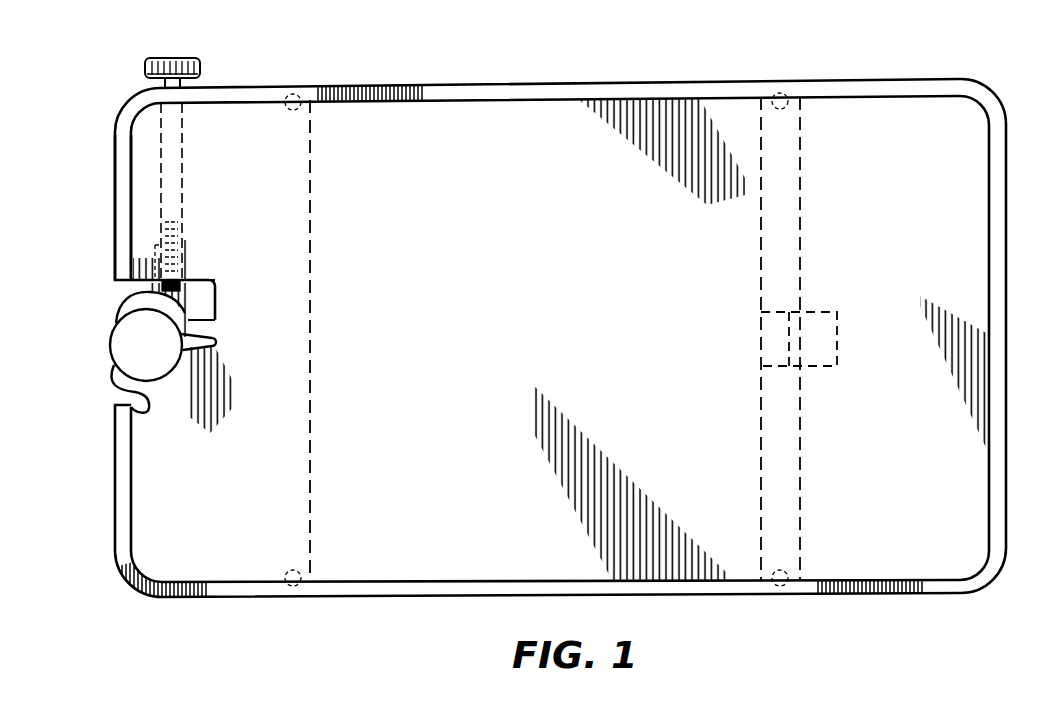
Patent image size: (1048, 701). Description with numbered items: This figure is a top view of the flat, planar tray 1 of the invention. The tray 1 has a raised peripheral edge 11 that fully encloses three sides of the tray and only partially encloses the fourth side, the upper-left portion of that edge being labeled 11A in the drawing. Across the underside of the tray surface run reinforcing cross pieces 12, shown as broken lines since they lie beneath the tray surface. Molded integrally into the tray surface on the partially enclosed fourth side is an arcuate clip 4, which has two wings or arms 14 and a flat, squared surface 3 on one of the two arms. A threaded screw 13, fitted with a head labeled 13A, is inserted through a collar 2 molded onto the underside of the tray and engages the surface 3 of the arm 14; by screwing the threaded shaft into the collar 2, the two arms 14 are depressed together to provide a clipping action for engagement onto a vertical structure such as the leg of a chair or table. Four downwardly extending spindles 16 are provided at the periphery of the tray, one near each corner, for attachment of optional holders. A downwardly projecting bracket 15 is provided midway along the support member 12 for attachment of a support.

The tray 1 is at (553, 130).
The collar 2 is at (150, 248).
The flat, squared surface 3 is at (202, 320).
The arcuate clip 4 is at (125, 298).
The raised peripheral edge 11 is at (990, 95).
The frame upper left leg 11A is at (116, 185).
The reinforcing cross pieces 12 is at (316, 256).
The threaded screw 13 is at (190, 260).
The knob 13A is at (200, 69).
The arms 14 is at (120, 328).
The downwardly projecting bracket 15 is at (802, 313).
The spindles 16 is at (304, 94).